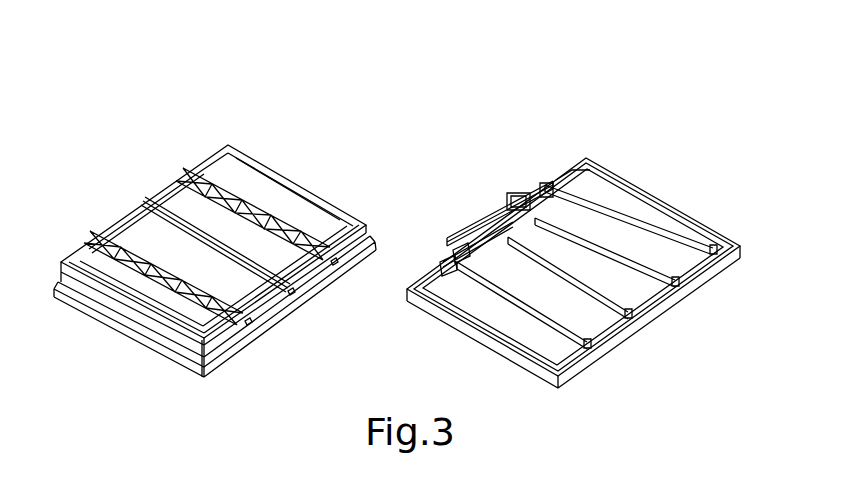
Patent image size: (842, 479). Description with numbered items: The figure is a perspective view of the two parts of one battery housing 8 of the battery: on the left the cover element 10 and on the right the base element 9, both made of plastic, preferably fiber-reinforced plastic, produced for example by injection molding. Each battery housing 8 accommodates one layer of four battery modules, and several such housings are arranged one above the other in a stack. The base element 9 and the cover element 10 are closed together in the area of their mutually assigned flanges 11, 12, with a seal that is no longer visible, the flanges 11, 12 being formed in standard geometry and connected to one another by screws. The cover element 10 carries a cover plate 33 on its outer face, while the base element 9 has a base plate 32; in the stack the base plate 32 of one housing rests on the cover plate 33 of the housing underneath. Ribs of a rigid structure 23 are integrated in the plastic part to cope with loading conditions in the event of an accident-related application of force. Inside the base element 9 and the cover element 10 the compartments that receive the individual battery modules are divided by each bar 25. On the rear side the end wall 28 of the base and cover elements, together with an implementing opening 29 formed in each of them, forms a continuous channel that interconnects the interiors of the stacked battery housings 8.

The battery housing 8 is at (487, 96).
The base element 9 is at (665, 159).
The cover element 10 is at (339, 158).
The flange 11 is at (478, 333).
The flange 12 is at (247, 338).
The rigid structure 23 is at (207, 170).
The bar 25 is at (627, 253).
The end wall 28 is at (150, 196).
The implementing opening 29 is at (490, 223).
The base plate 32 is at (599, 214).
The cover plate 33 is at (270, 195).